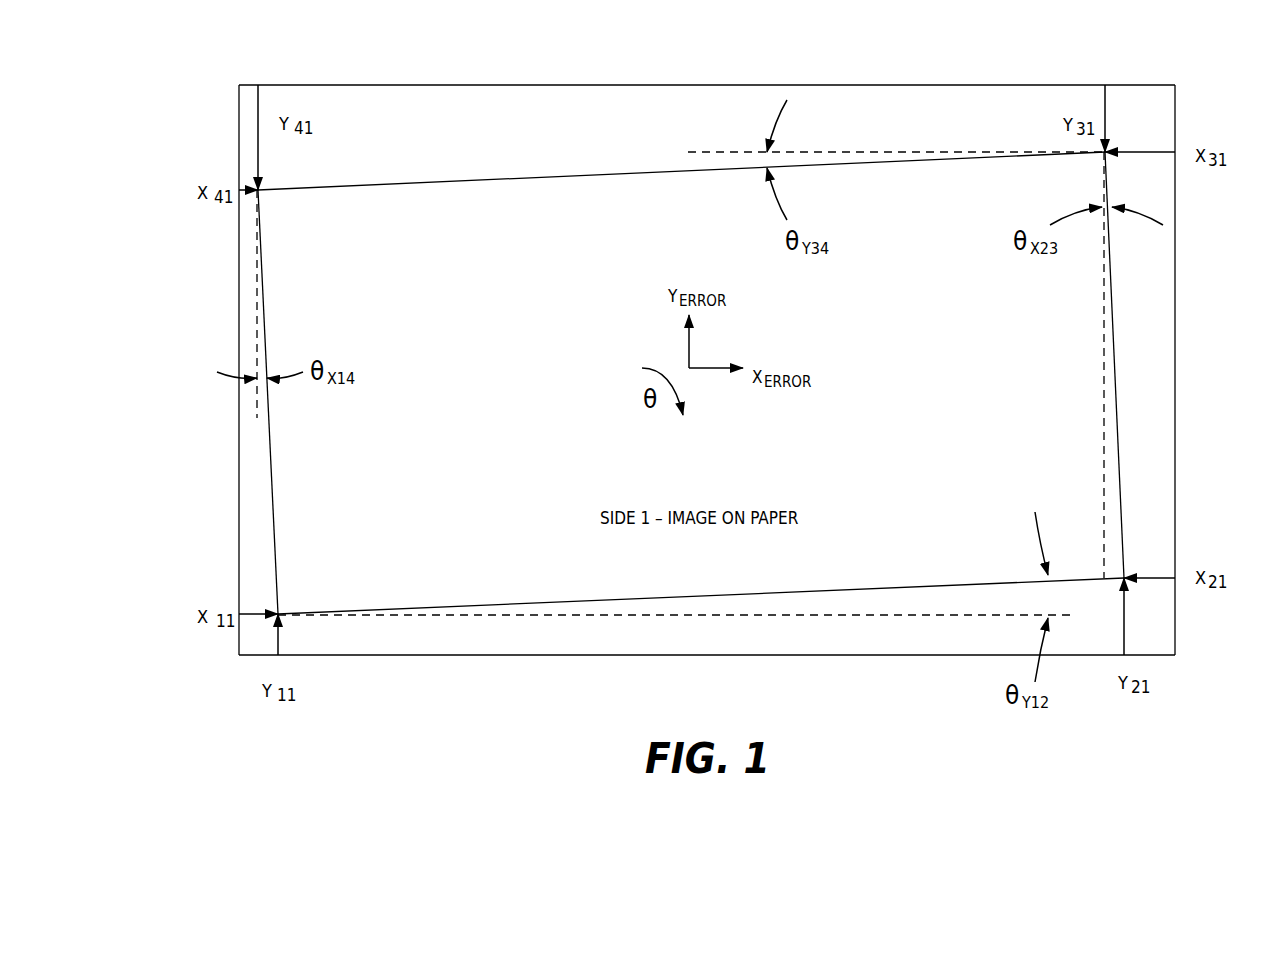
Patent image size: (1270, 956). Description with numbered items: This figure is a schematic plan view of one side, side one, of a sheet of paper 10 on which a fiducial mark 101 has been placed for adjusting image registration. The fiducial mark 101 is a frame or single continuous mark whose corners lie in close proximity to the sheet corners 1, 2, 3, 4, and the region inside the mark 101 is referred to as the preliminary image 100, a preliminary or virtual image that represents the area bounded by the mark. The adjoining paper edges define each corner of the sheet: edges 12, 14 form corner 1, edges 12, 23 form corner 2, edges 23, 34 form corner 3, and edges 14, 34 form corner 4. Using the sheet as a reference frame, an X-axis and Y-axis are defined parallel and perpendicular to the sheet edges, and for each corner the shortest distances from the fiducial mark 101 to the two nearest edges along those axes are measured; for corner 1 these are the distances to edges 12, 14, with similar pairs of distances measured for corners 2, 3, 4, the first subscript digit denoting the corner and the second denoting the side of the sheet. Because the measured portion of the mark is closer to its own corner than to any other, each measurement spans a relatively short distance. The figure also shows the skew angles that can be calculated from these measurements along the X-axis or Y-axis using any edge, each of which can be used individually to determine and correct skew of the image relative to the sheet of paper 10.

The sheet corner 1 is at (237, 655).
The sheet corner 2 is at (1178, 655).
The sheet corner 3 is at (1175, 85).
The sheet corner 4 is at (237, 85).
The sheet of paper 10 is at (708, 374).
The paper edge 12 is at (350, 657).
The paper edge 14 is at (240, 327).
The paper edge 23 is at (1175, 320).
The paper edge 34 is at (705, 85).
The preliminary image 100 is at (647, 372).
The fiducial mark 101 is at (268, 447).